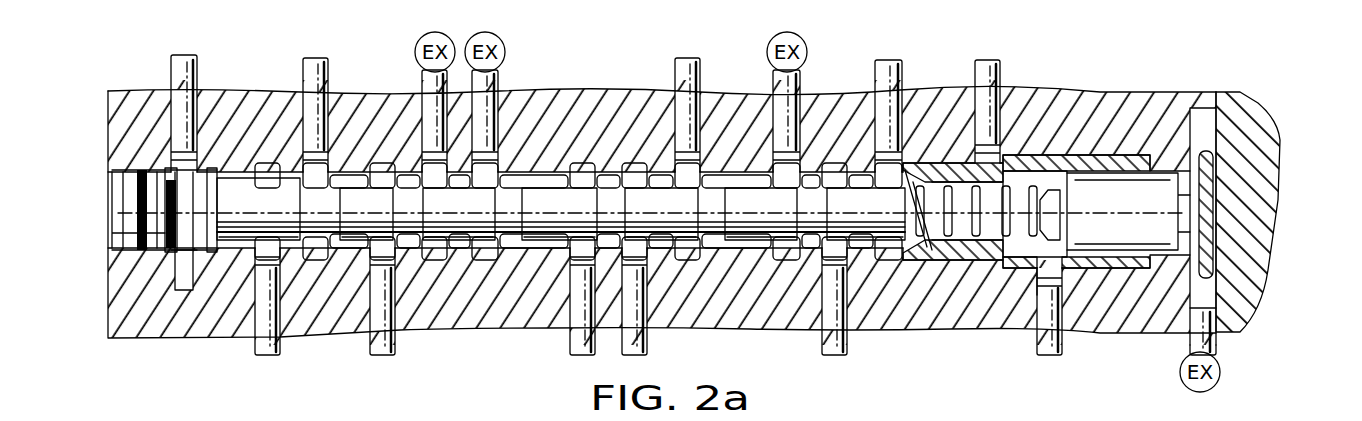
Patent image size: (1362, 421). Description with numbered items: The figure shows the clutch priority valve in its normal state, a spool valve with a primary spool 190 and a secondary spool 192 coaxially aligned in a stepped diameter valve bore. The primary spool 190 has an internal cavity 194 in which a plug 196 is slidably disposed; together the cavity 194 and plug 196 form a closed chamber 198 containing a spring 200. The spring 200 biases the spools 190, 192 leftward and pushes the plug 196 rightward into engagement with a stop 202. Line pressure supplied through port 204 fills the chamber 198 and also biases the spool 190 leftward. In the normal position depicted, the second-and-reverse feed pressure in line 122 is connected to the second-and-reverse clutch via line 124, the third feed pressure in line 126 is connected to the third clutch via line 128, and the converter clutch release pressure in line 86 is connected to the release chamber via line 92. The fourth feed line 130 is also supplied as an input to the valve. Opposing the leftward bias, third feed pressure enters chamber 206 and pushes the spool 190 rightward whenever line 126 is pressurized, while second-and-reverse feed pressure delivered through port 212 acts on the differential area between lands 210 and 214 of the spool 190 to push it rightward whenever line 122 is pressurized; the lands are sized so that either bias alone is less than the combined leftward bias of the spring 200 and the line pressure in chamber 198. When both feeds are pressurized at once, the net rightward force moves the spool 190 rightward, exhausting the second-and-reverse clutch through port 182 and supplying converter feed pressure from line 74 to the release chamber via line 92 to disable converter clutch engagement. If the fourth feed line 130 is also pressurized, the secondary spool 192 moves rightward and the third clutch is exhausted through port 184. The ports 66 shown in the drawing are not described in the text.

The 4th feed line 130 is at (178, 78).
The 3rd feed line 126 is at (311, 75).
The exhaust port 184 is at (430, 80).
The TCC release pressure line 86 is at (682, 78).
The exhaust port 182 is at (782, 82).
The spool land 214 is at (813, 188).
The 2/R feed line 122 is at (888, 83).
The chamber 206 is at (983, 158).
The spring 200 is at (1040, 190).
The internal cavity 194 is at (1138, 178).
The plug 196 is at (1158, 190).
The stop 202 is at (1212, 252).
The exhaust port 66 is at (262, 340).
The secondary spool 192 is at (357, 217).
The 3rd clutch line 128 is at (383, 338).
The converter feed pressure line 74 is at (578, 338).
The release chamber line 92 is at (635, 338).
The primary spool 190 is at (757, 222).
The 2/R clutch line 124 is at (830, 338).
The 2/R feed port 212 is at (845, 255).
The spool land 210 is at (915, 235).
The closed chamber 198 is at (1022, 250).
The line pressure port 204 is at (1053, 280).